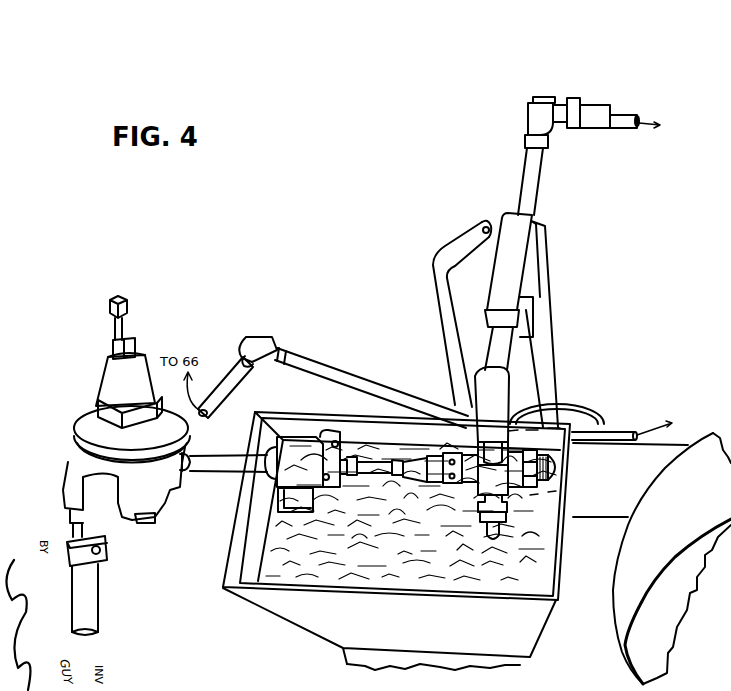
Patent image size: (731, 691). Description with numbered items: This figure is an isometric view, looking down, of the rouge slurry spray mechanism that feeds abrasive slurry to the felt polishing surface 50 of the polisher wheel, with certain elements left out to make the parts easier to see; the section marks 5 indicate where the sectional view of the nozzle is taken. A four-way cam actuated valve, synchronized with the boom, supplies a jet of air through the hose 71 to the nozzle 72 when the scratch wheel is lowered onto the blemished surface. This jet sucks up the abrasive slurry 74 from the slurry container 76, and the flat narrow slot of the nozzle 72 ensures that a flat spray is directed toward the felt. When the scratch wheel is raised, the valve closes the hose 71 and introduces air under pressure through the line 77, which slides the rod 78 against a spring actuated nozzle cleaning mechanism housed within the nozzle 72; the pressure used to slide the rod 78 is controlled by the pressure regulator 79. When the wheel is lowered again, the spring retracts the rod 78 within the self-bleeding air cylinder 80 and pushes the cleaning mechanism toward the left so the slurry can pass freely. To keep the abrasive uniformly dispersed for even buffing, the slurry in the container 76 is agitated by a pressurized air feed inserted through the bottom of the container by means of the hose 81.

The polishing surface 50 is at (615, 621).
The hose 71 is at (320, 364).
The nozzle 72 is at (545, 481).
The abrasive slurry 74 is at (395, 577).
The slurry container 76 is at (285, 608).
The line 77 is at (93, 595).
The rod 78 is at (375, 463).
The pressure regulator 79 is at (173, 483).
The self-bleeding air cylinder 80 is at (273, 471).
The hose 81 is at (463, 237).
The section line 5- 5 is at (550, 440).